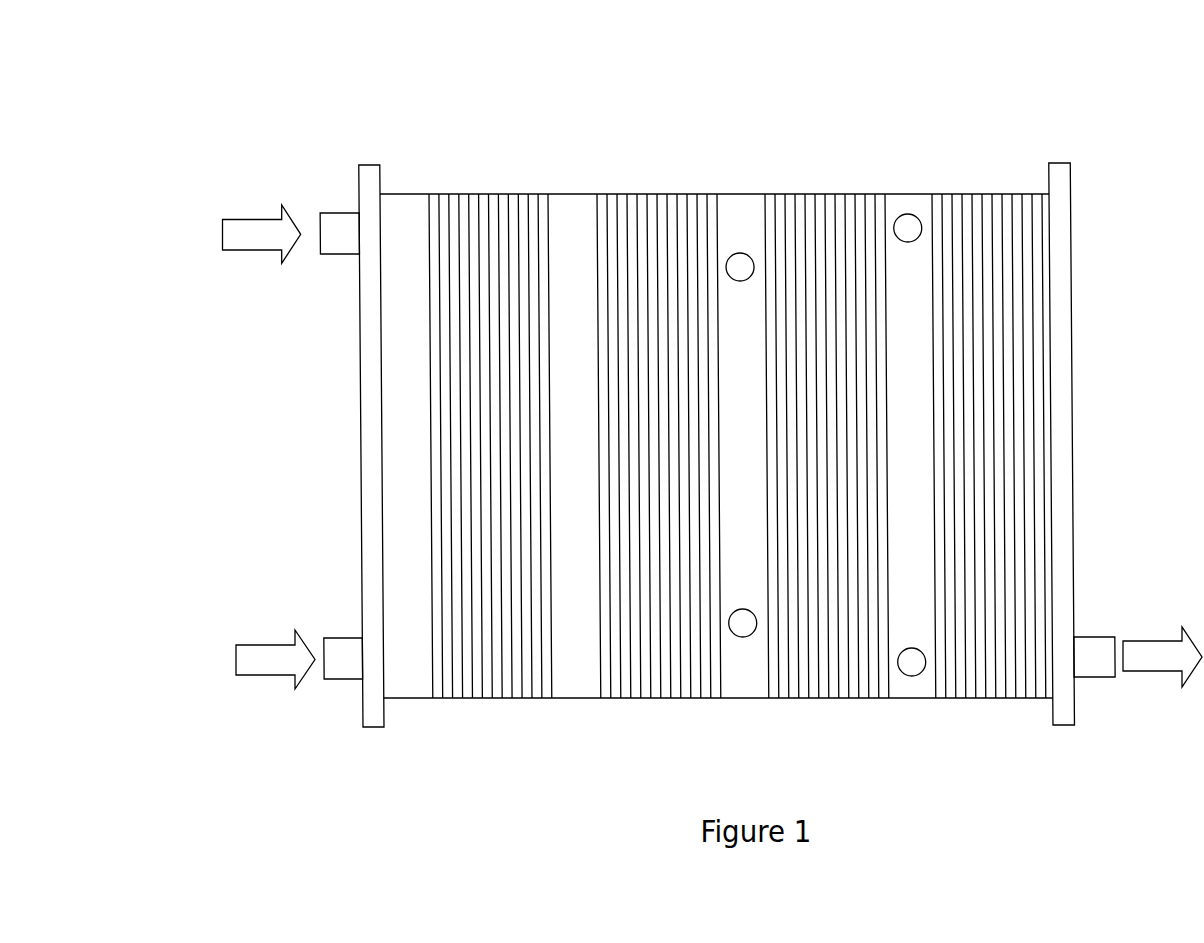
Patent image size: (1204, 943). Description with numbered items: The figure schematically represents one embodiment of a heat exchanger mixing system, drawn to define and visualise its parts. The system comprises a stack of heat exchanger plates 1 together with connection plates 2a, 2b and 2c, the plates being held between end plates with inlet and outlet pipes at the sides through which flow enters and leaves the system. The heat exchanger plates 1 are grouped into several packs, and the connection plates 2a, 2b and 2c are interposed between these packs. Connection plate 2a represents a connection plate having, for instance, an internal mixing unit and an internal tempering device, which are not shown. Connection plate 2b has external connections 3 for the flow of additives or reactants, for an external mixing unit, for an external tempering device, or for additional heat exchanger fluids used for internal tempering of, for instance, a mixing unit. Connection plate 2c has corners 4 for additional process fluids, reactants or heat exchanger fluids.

The heat exchanger plates 1 is at (488, 407).
The connection plate 2a is at (570, 260).
The connection plate 2b is at (746, 218).
The connection plate 2c is at (906, 583).
The external connections 3 is at (739, 627).
The corners 4 is at (903, 228).